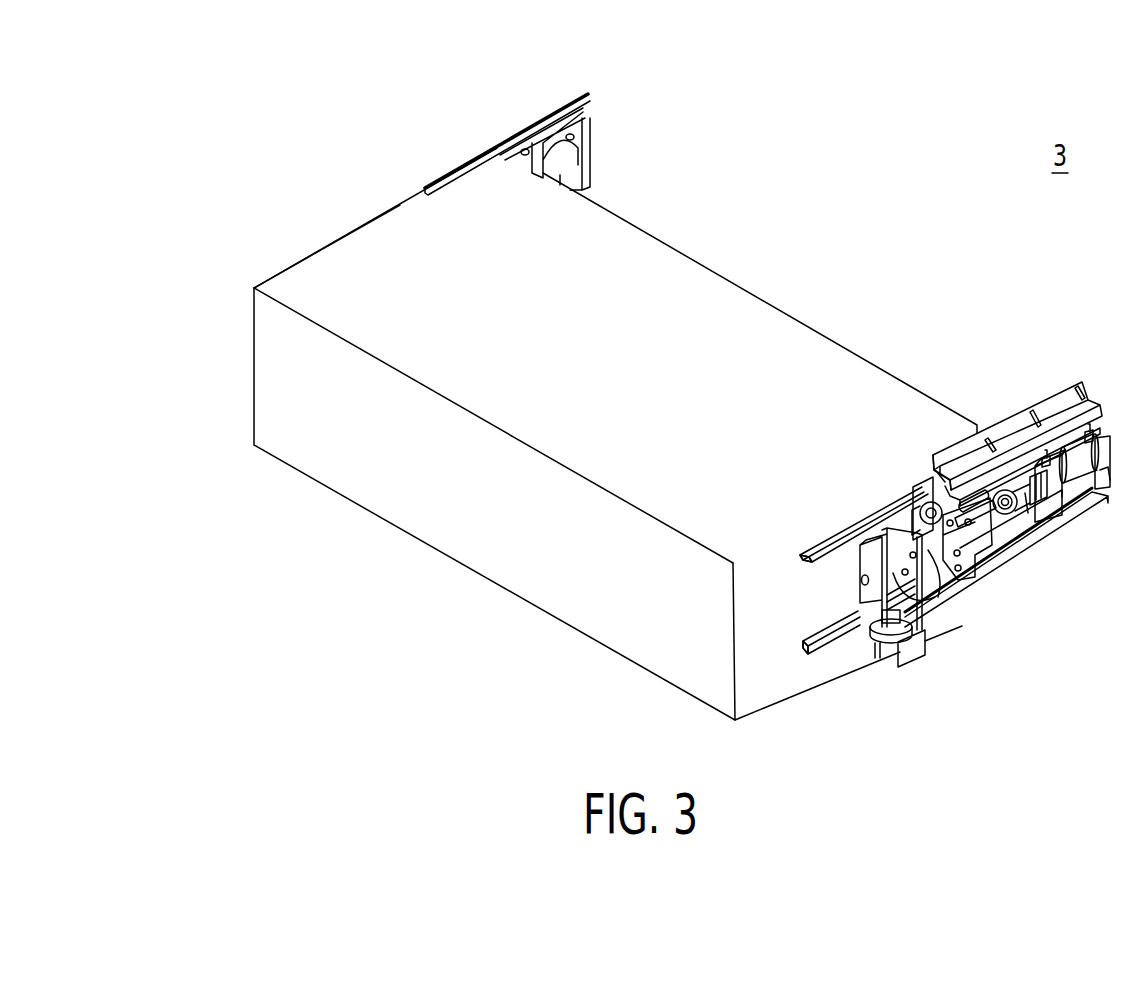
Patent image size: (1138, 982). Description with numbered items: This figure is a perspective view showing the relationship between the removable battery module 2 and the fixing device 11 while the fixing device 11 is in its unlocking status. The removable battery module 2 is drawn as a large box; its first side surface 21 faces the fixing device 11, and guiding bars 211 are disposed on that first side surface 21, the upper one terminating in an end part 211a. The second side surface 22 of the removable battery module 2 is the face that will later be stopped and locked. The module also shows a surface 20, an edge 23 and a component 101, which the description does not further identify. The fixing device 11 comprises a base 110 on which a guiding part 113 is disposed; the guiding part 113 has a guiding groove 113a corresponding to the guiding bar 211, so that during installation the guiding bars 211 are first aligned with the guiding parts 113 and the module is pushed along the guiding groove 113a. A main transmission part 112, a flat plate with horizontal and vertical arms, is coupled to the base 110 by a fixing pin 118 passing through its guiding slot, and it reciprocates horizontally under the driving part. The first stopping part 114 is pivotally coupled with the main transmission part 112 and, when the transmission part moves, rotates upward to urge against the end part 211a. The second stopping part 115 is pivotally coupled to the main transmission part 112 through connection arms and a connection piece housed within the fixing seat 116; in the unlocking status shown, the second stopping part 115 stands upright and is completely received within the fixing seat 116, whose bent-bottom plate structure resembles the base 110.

The removable battery module 2 is at (697, 237).
The top surface 20 is at (735, 305).
The first side surface 21 is at (745, 645).
The second side surface 22 is at (568, 598).
The top edge 23 is at (375, 217).
The fixing bracket 101 is at (590, 153).
The guiding bar 211 is at (828, 542).
The end part 211a is at (778, 548).
The fixing device 11 is at (1040, 372).
The base 110 is at (1030, 532).
The main transmission part 112 is at (997, 518).
The guiding part 113 is at (1020, 440).
The guiding groove 113a is at (935, 478).
The first stopping part 114 is at (910, 528).
The second stopping part 115 is at (882, 547).
The fixing seat 116 is at (893, 580).
The fixing pin 118 is at (972, 527).